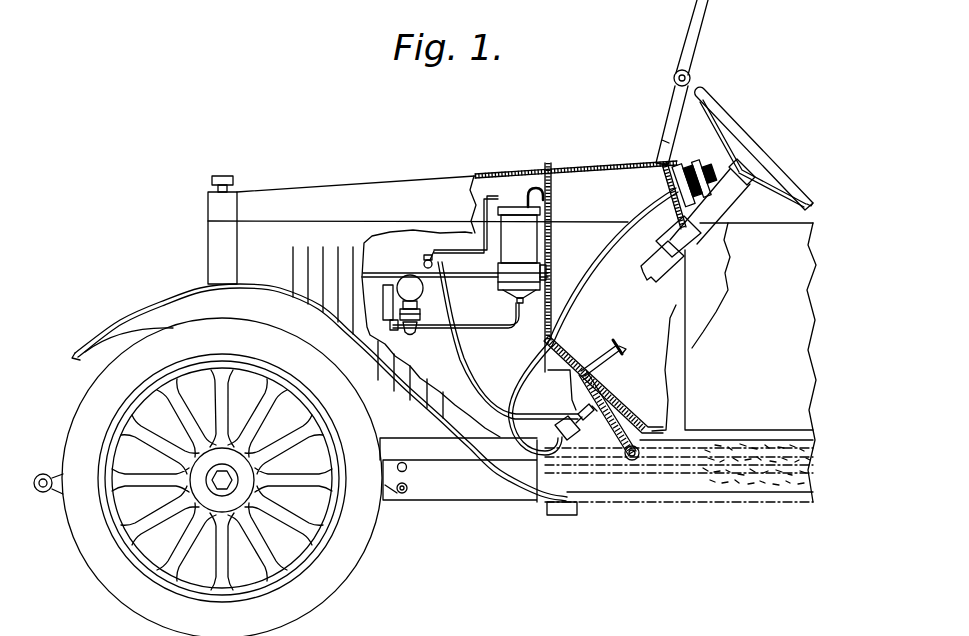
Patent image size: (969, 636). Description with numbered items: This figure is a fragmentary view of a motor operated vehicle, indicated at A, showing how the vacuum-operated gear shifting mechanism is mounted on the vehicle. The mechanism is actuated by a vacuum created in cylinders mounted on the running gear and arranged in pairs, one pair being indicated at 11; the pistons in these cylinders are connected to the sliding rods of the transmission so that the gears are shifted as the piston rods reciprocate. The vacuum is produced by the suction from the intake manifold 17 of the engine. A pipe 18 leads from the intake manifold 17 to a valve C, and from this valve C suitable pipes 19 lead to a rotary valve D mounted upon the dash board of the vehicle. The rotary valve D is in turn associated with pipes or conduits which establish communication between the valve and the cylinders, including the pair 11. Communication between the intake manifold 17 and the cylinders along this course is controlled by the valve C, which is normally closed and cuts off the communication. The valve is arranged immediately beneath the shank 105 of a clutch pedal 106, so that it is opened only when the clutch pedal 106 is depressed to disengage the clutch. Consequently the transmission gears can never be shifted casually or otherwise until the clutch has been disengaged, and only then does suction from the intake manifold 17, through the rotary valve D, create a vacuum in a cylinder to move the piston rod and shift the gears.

The intake manifold 17 is at (423, 267).
The pipe 18 is at (467, 364).
The pipes 19 is at (584, 274).
The shank 105 is at (600, 401).
The clutch pedal 106 is at (616, 349).
The portion of the motor operated vehicle A is at (468, 423).
The valve C is at (578, 440).
The rotary valve D is at (670, 179).
The pair of cylinders 11 is at (760, 483).